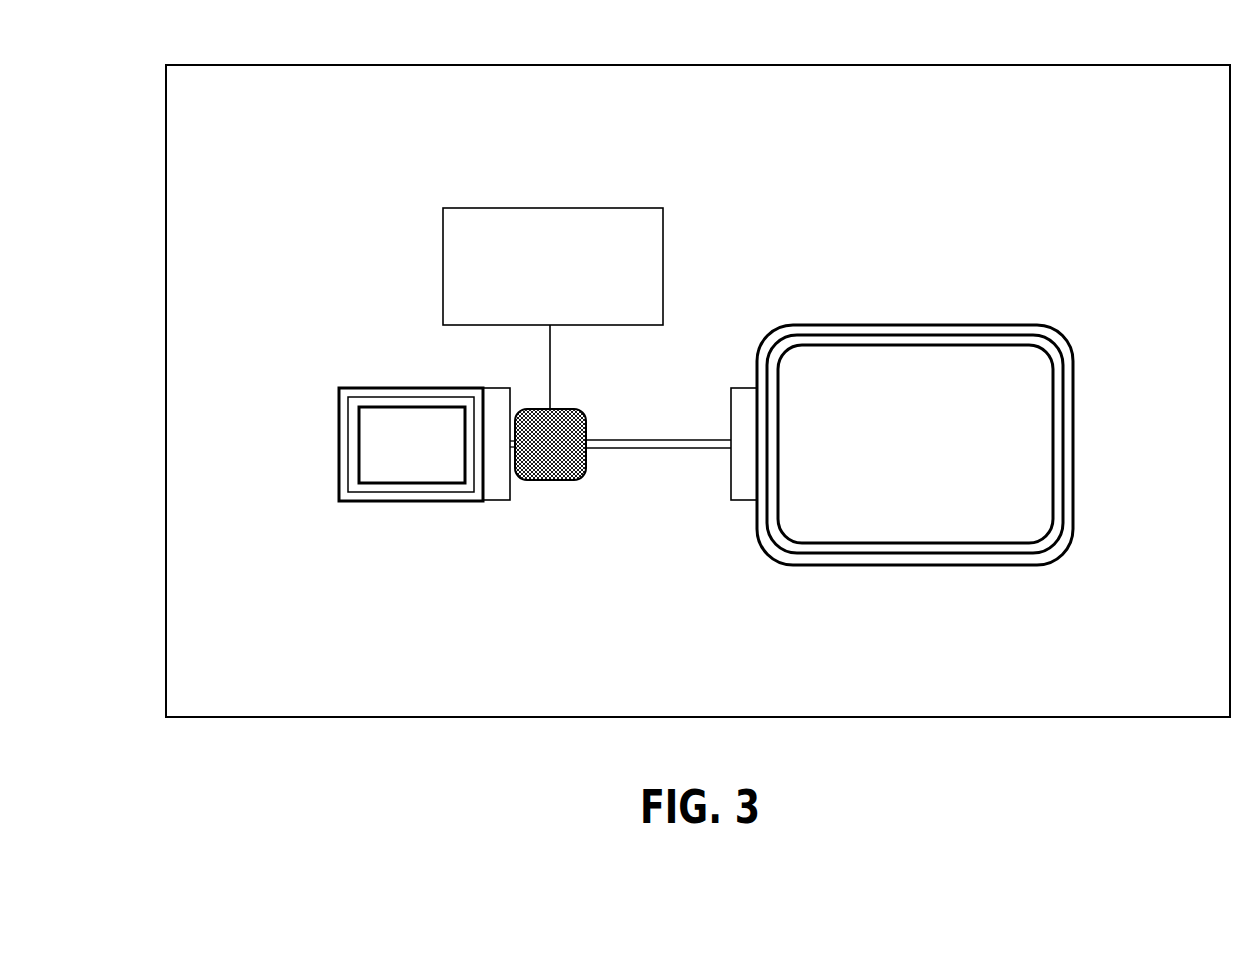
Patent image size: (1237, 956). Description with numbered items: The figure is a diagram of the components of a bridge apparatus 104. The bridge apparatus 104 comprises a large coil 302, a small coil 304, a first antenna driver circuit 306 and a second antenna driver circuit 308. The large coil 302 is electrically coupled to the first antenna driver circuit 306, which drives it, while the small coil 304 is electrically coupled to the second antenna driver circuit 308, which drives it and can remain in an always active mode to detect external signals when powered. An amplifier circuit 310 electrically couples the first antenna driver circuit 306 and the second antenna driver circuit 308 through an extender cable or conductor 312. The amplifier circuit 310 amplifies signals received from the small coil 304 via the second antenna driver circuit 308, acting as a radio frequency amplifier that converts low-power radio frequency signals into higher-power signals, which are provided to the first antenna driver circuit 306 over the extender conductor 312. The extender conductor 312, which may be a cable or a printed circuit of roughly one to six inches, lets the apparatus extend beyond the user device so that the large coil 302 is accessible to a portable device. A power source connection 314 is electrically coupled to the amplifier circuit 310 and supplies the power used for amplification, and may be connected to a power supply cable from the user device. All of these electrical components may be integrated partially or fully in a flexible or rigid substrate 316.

The bridge apparatus 104 is at (681, 135).
The large coil 302 is at (913, 322).
The small coil 304 is at (405, 387).
The first antenna driver circuit 306 is at (708, 417).
The second antenna driver circuit 308 is at (499, 378).
The amplifier circuit 310 is at (557, 481).
The extender cable or conductor 312 is at (655, 449).
The power source connection 314 is at (538, 302).
The flexible or rigid substrate 316 is at (156, 120).